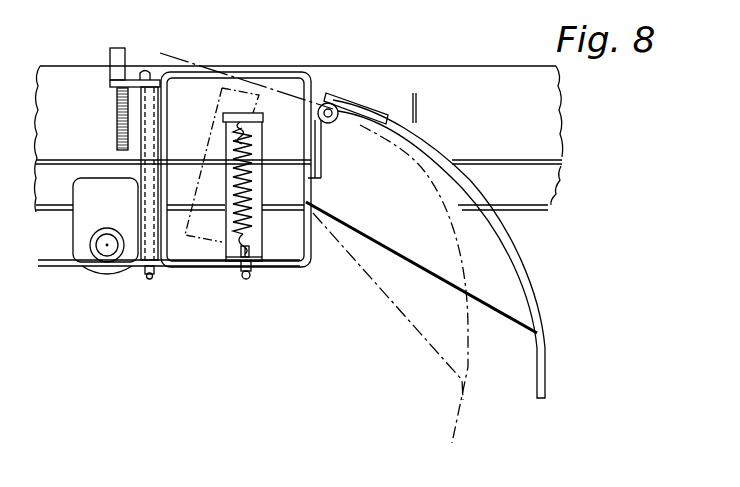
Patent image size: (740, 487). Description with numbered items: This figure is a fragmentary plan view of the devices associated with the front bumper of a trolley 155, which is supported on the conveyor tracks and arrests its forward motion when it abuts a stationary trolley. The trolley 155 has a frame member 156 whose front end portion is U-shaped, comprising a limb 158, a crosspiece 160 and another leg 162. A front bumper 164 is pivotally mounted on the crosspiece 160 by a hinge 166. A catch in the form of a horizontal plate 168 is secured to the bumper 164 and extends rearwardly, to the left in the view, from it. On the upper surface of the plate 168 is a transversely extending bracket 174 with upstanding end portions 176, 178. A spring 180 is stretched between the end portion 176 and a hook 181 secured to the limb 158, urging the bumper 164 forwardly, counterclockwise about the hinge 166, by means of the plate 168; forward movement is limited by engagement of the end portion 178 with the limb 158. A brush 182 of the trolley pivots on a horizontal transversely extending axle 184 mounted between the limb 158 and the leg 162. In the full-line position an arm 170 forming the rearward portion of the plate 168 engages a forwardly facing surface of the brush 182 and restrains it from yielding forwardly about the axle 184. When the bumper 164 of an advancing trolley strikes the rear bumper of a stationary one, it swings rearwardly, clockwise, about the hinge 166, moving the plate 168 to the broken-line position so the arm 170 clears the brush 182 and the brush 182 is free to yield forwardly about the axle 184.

The trolley 155 is at (150, 370).
The frame member 156 is at (190, 264).
The limb 158 is at (300, 272).
The crosspiece 160 is at (314, 181).
The leg 162 is at (280, 70).
The front bumper 164 is at (504, 231).
The hinge 166 is at (332, 111).
The horizontal plate 168 is at (408, 213).
The arm 170 is at (204, 95).
The bracket 174 is at (255, 216).
The end portion 176 is at (263, 120).
The end portion 178 is at (234, 268).
The spring 180 is at (254, 140).
The hook 181 is at (251, 249).
The brush 182 is at (137, 120).
The axle 184 is at (170, 268).